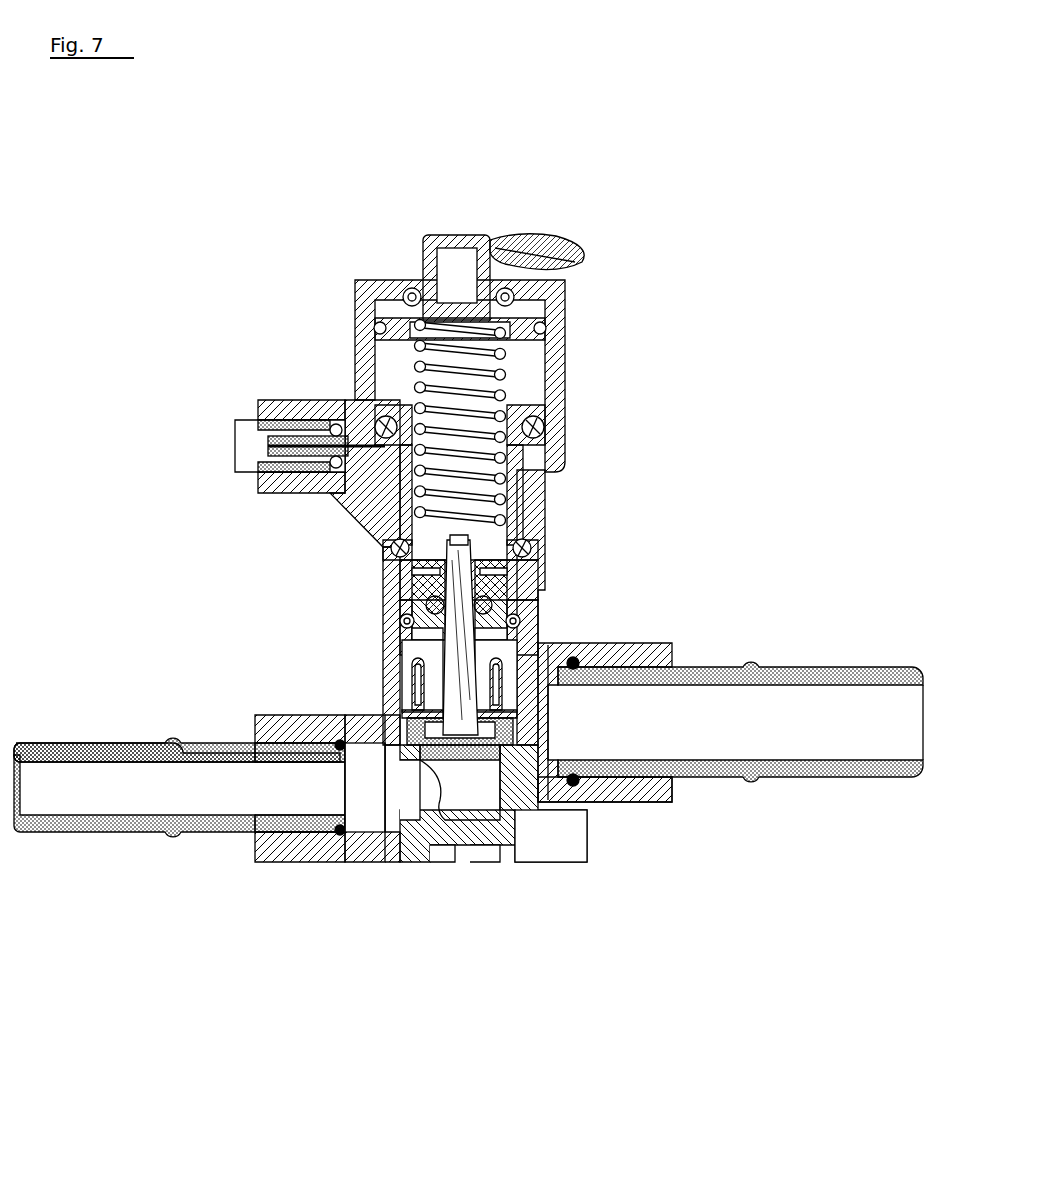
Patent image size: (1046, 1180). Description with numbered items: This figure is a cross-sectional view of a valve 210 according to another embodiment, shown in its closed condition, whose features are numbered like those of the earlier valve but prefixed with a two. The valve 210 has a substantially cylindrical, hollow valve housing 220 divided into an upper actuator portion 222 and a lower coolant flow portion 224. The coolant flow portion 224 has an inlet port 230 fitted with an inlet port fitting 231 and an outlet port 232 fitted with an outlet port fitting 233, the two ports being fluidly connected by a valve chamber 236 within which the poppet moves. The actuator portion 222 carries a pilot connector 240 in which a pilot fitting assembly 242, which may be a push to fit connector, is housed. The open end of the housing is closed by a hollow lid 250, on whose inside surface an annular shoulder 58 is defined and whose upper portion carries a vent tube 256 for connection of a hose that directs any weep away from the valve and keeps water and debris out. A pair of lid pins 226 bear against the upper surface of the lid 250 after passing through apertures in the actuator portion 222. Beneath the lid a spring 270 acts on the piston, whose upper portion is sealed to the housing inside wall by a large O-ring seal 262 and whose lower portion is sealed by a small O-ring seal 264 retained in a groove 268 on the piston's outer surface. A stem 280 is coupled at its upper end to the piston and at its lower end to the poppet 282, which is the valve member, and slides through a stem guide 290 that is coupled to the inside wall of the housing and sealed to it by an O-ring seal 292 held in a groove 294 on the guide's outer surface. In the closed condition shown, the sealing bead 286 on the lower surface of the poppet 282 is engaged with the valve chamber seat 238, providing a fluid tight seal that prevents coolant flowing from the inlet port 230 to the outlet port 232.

The valve 210 is at (730, 276).
The valve housing 220 is at (545, 510).
The actuator portion 222 is at (565, 352).
The coolant flow portion 224 is at (536, 600).
The lid pins 226 is at (408, 290).
The inlet port 230 is at (668, 645).
The inlet port fitting 231 is at (782, 666).
The outlet port 232 is at (270, 865).
The outlet port fitting 233 is at (128, 742).
The valve chamber 236 is at (622, 790).
The valve chamber seat 238 is at (425, 752).
The pilot connector 240 is at (275, 400).
The pilot fitting assembly 242 is at (240, 443).
The lid 250 is at (432, 236).
The vent tube 256 is at (512, 246).
The large O-ring seal 262 is at (545, 428).
The small O-ring seal 264 is at (385, 548).
The groove 268 is at (393, 538).
The spring 270 is at (505, 390).
The stem 280 is at (452, 580).
The poppet 282 is at (408, 715).
The sealing bead 286 is at (508, 690).
The stem guide 290 is at (412, 600).
The O-ring seal 292 is at (400, 621).
The groove 294 is at (520, 621).
The annular shoulder 58 is at (372, 322).